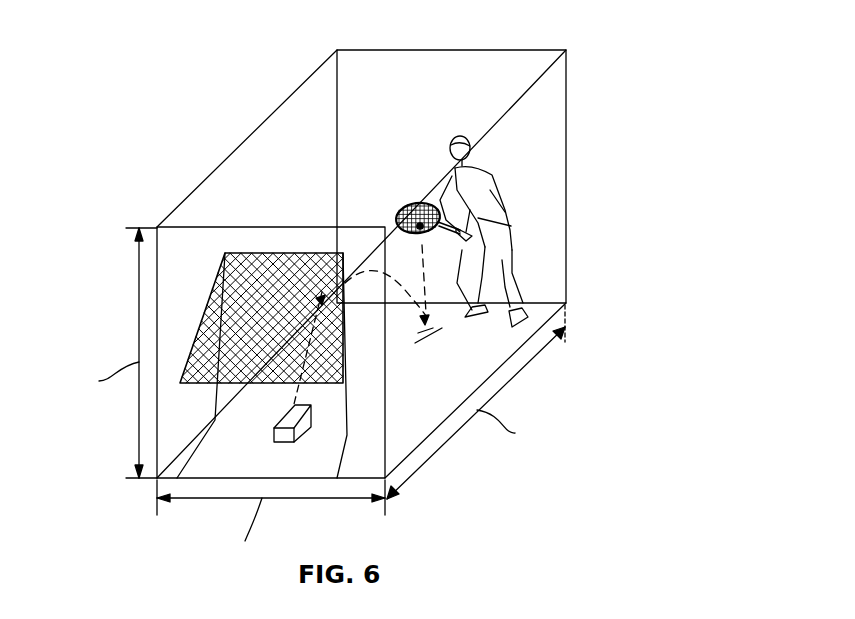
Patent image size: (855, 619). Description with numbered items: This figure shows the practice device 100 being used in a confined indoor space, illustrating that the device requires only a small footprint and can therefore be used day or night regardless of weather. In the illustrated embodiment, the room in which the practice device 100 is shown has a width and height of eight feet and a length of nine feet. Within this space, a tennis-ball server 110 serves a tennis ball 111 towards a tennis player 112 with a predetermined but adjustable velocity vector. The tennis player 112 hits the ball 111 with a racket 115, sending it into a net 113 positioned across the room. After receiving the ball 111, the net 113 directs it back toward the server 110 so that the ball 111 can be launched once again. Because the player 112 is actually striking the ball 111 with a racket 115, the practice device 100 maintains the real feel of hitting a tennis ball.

The practice device 100 is at (197, 245).
The tennis-ball server 110 is at (274, 437).
The tennis ball 111 is at (421, 198).
The tennis player 112 is at (503, 220).
The net 113 is at (304, 257).
The racket 115 is at (417, 200).